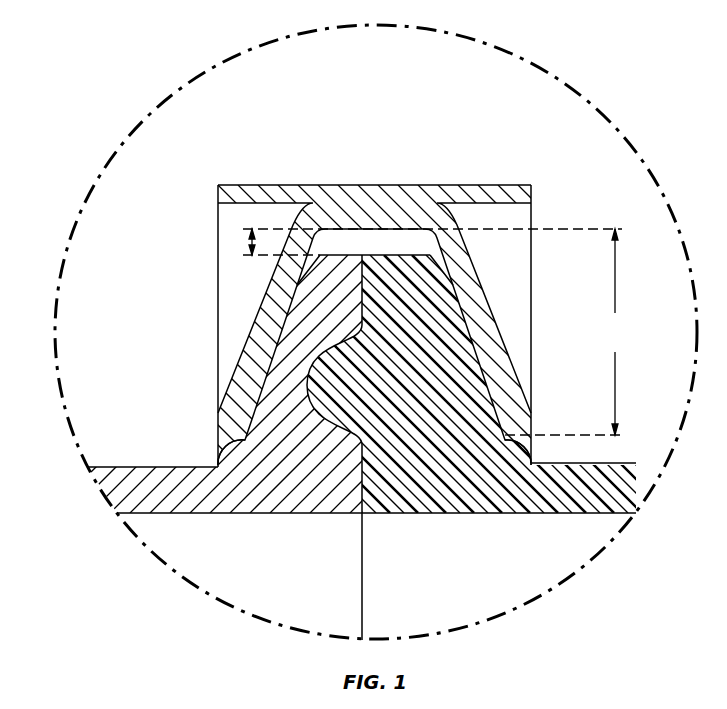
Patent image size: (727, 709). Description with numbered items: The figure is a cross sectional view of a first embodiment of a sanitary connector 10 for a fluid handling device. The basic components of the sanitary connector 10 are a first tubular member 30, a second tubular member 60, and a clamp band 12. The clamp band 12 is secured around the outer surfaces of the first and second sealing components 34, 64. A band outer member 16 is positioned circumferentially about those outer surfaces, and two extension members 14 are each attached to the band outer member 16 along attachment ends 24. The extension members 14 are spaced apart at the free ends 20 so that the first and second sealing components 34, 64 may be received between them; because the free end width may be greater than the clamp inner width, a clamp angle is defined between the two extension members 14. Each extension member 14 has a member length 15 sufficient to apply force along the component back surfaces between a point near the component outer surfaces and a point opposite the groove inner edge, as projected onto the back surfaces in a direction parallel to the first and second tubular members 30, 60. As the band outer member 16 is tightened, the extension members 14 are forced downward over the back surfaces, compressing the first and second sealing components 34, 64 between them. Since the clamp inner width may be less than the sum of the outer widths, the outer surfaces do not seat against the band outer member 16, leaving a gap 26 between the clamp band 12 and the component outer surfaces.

The sanitary connector 10 is at (252, 132).
The clamp band 12 is at (525, 193).
The extension members 14 is at (227, 406).
The member length 15 is at (567, 332).
The band outer member 16 is at (218, 200).
The free ends 20 is at (226, 430).
The attachment ends 24 is at (306, 206).
The gap 26 is at (243, 240).
The first tubular member 30 is at (178, 488).
The first sealing component 34 is at (297, 370).
The second tubular member 60 is at (570, 485).
The second sealing component 64 is at (427, 382).